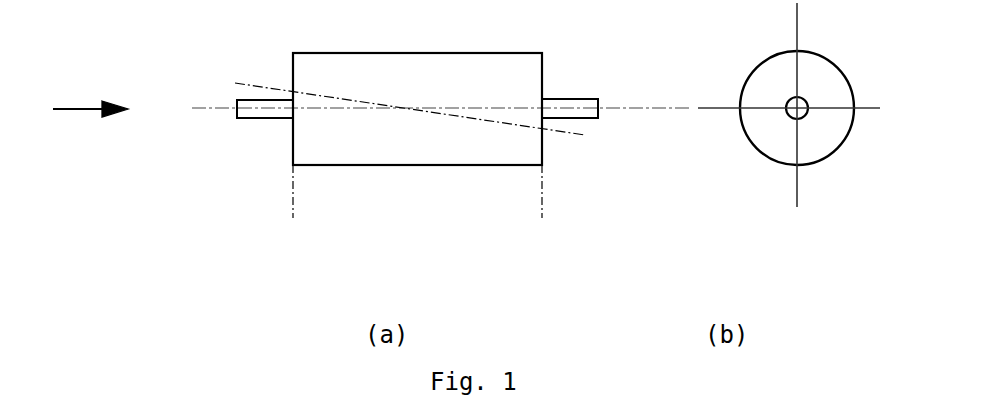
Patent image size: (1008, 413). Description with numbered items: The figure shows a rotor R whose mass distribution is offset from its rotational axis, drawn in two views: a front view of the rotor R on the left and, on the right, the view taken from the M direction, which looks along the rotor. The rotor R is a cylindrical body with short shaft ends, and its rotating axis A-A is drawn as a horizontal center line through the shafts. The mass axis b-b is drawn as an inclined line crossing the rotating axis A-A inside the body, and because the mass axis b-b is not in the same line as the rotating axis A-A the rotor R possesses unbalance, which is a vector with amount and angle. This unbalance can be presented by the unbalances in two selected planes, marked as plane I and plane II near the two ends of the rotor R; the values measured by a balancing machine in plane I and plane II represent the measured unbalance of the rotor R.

The rotor R is at (400, 74).
The M direction M is at (90, 93).
The rotating axis A- A is at (442, 125).
The mass axis b- b is at (410, 112).
The plane I is at (293, 206).
The plane II is at (536, 209).